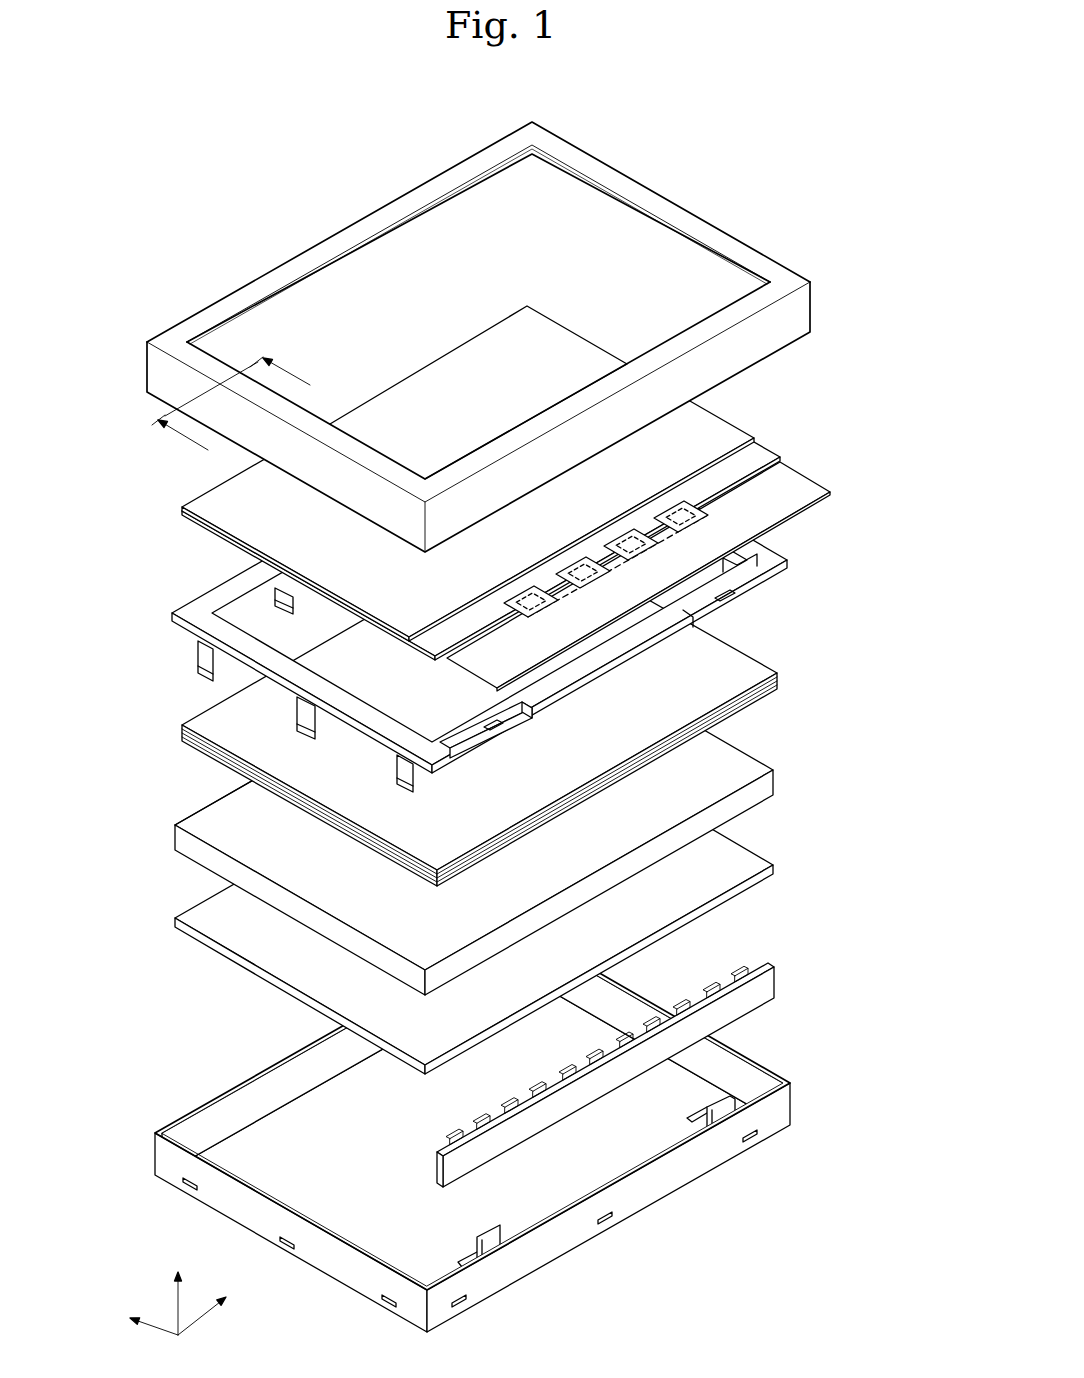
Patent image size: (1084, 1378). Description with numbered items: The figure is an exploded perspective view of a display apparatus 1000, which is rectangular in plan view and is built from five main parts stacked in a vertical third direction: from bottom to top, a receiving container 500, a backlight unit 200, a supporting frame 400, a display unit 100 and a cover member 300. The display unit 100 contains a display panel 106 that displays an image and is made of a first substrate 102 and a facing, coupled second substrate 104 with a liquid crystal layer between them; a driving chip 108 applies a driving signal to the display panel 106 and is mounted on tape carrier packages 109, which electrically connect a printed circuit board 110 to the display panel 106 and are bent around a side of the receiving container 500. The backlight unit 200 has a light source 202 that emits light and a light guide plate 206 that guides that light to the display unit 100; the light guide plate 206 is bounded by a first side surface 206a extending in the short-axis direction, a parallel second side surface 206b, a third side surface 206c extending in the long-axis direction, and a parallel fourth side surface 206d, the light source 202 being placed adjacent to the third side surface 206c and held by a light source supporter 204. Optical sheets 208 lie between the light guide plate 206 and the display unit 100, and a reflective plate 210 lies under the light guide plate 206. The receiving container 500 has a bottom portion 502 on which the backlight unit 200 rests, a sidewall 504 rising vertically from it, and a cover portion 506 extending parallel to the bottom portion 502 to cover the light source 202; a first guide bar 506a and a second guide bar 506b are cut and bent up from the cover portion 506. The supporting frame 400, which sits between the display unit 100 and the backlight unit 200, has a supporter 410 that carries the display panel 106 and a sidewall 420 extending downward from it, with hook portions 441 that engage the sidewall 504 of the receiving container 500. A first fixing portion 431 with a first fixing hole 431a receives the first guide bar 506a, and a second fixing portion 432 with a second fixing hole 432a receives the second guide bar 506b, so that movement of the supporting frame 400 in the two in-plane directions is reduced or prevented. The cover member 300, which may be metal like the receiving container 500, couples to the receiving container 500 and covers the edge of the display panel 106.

The display apparatus 1000 is at (503, 703).
The cover member 300 is at (478, 337).
The display unit 100 is at (562, 499).
The first substrate 102 is at (645, 518).
The second substrate 104 is at (672, 508).
The display panel 106 is at (531, 483).
The driving chip 108 is at (686, 514).
The tape carrier packages 109 is at (680, 505).
The printed circuit board 110 is at (780, 505).
The supporting frame 400 is at (465, 600).
The supporter 410 is at (217, 605).
The sidewall 420 is at (257, 663).
The hook portion 441 is at (203, 655).
The first fixing portion 431 is at (768, 597).
The first fixing hole 431a is at (744, 603).
The second fixing portion 432 is at (524, 743).
The second fixing hole 432a is at (507, 726).
The backlight unit 200 is at (511, 857).
The optical sheets 208 is at (509, 707).
The light guide plate 206 is at (485, 810).
The first side surface 206a is at (202, 857).
The second side surface 206b is at (740, 740).
The third side surface 206c is at (747, 803).
The fourth side surface 206d is at (319, 725).
The reflective plate 210 is at (733, 838).
The light source 202 is at (742, 968).
The light source supporter 204 is at (768, 966).
The receiving container 500 is at (463, 1129).
The bottom portion 502 is at (272, 1147).
The sidewall 504 is at (683, 1168).
The cover portion 506 is at (565, 1192).
The first guide bar 506a is at (774, 1134).
The second guide bar 506b is at (503, 1256).